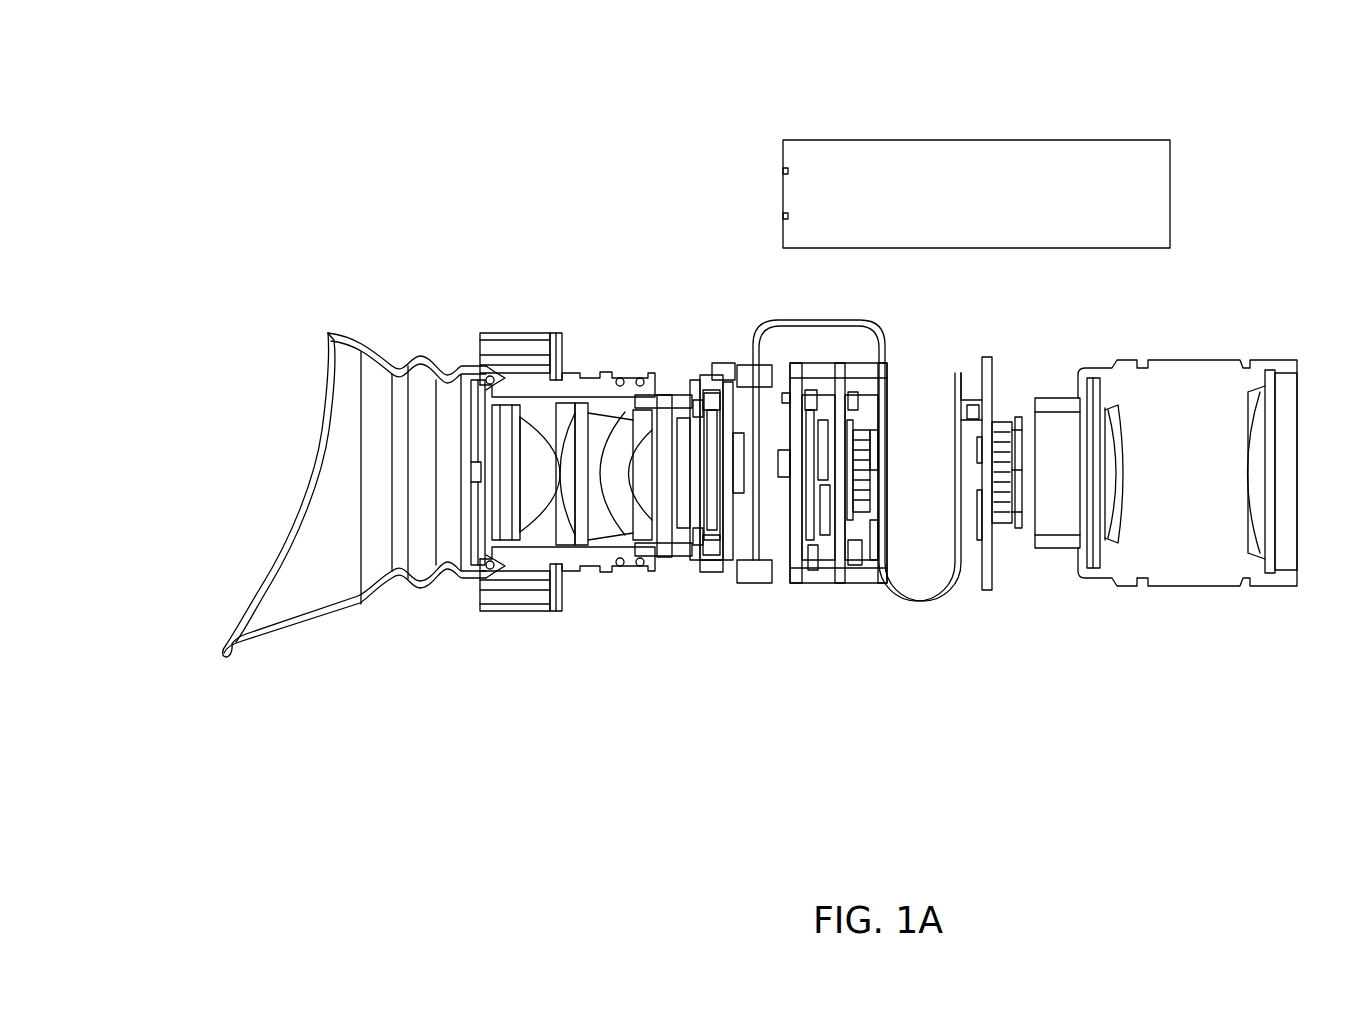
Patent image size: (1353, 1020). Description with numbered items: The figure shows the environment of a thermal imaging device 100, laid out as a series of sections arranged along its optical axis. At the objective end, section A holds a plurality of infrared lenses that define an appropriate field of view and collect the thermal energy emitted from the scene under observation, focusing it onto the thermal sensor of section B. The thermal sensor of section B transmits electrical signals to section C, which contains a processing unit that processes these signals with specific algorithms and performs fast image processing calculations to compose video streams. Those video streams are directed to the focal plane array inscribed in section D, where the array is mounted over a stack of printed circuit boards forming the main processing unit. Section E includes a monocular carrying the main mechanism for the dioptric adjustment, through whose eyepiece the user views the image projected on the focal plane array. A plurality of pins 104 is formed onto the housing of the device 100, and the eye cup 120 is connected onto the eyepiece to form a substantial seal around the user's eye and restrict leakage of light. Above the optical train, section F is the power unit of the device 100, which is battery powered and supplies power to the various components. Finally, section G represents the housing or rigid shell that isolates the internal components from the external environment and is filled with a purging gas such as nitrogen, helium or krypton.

The device 100 is at (184, 53).
The eye cup 120 is at (327, 500).
The plurality of pins 104 is at (665, 545).
The section E is at (593, 605).
The section D is at (707, 587).
The section C is at (865, 610).
The section B is at (997, 620).
The section A is at (1182, 510).
The section F is at (1157, 265).
The section G is at (624, 177).